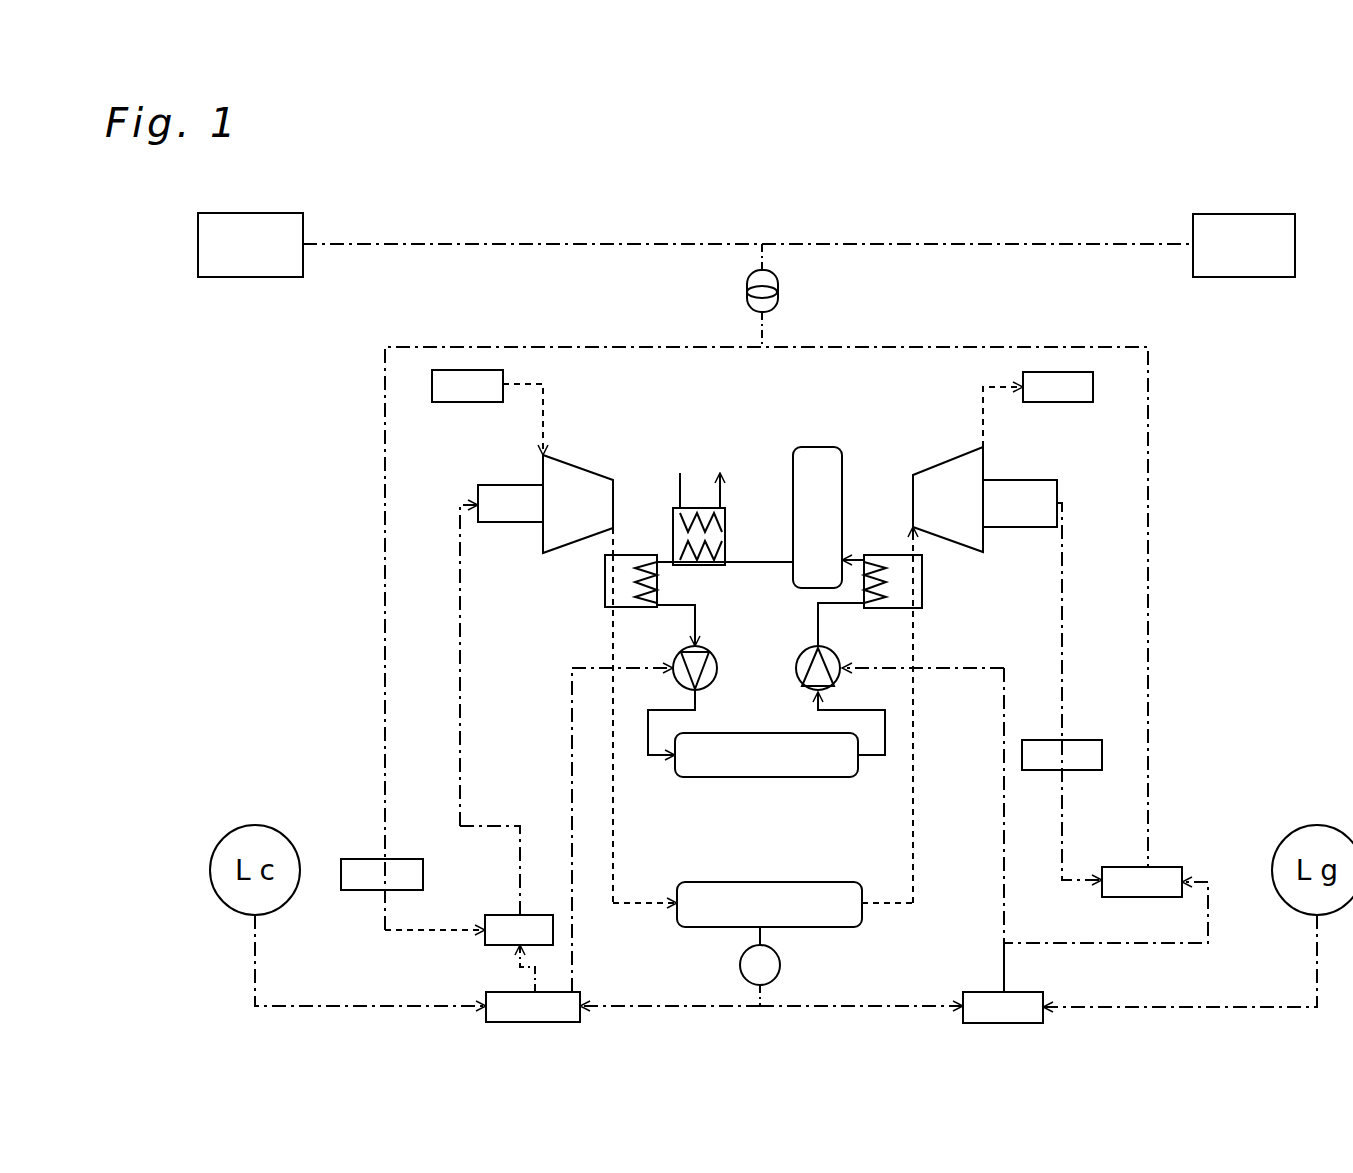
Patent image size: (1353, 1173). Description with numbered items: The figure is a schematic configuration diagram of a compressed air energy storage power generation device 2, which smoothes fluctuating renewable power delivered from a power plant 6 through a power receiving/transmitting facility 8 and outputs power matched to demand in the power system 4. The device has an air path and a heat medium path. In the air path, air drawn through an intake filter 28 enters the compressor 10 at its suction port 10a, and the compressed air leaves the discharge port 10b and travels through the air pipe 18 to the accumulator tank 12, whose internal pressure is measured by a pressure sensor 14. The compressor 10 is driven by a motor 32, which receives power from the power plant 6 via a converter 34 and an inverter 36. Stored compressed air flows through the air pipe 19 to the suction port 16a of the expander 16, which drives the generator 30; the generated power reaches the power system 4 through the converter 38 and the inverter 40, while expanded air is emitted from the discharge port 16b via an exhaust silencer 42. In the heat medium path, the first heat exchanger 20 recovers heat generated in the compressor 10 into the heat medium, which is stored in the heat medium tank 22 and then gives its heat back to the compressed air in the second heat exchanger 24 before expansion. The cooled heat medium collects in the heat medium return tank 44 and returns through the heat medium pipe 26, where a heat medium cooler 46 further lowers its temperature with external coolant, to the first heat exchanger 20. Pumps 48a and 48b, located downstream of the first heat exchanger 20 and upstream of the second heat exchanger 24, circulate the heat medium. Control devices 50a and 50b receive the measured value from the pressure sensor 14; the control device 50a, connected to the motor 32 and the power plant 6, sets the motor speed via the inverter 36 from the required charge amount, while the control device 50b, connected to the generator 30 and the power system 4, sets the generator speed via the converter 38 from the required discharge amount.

The compressed air energy storage power generation device 2 is at (1212, 468).
The power system 4 is at (1242, 277).
The power plant 6 is at (253, 277).
The power receiving/transmitting facility 8 is at (778, 289).
The compressor 10 is at (570, 457).
The suction port 10a is at (541, 455).
The discharge port 10b is at (613, 528).
The accumulator tank 12 is at (769, 904).
The pressure sensor 14 is at (782, 963).
The expander 16 is at (933, 467).
The suction port 16a is at (912, 527).
The discharge port 16b is at (984, 447).
The air pipe 18 is at (545, 408).
The air pipe 19 is at (981, 418).
The first heat exchanger 20 is at (603, 599).
The heat medium tank 22 is at (766, 755).
The second heat exchanger 24 is at (922, 597).
The heat medium pipe 26 is at (698, 622).
The intake filter 28 is at (455, 402).
The generator 30 is at (1005, 527).
The motor 32 is at (510, 522).
The converter 34 is at (363, 859).
The inverter 36 is at (494, 915).
The converter 38 is at (1080, 740).
The inverter 40 is at (1160, 867).
The exhaust silencer 42 is at (1070, 402).
The heat medium return tank 44 is at (817, 517).
The heat medium cooler 46 is at (727, 523).
The pump 48a is at (700, 686).
The pump 48b is at (803, 648).
The control device 50a is at (486, 993).
The control device 50b is at (1047, 992).